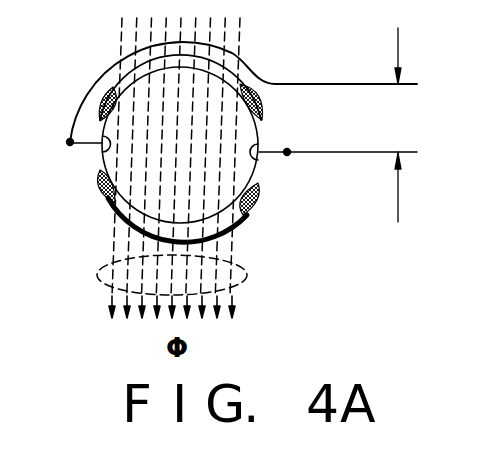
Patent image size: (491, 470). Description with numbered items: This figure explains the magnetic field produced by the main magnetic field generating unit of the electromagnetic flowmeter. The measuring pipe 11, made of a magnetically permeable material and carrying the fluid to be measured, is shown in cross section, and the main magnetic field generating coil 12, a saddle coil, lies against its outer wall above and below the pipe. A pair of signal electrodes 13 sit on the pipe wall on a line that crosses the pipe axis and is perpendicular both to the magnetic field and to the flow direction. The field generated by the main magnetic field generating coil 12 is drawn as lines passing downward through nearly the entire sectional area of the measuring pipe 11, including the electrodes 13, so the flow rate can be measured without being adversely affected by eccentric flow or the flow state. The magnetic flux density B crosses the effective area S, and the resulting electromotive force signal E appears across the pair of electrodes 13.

The measuring pipe 11 is at (100, 119).
The main magnetic field generating coil 12 is at (244, 75).
The signal electrodes 13 is at (100, 151).
The electromotive force signal E is at (394, 125).
The effective area S is at (247, 273).
The magnetic flux density B is at (185, 316).